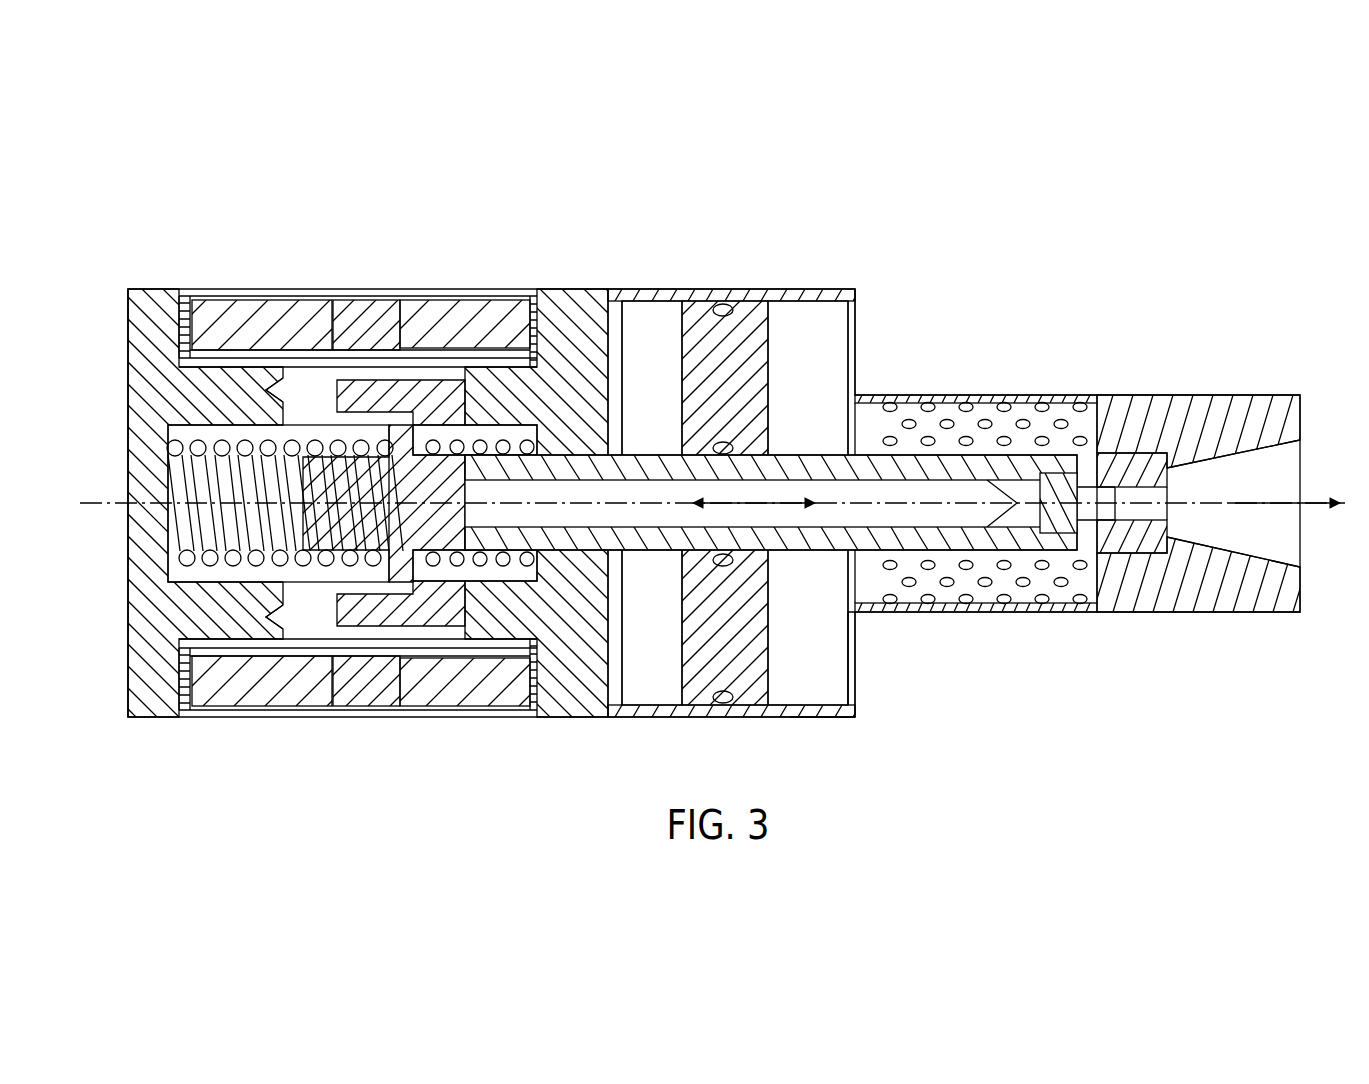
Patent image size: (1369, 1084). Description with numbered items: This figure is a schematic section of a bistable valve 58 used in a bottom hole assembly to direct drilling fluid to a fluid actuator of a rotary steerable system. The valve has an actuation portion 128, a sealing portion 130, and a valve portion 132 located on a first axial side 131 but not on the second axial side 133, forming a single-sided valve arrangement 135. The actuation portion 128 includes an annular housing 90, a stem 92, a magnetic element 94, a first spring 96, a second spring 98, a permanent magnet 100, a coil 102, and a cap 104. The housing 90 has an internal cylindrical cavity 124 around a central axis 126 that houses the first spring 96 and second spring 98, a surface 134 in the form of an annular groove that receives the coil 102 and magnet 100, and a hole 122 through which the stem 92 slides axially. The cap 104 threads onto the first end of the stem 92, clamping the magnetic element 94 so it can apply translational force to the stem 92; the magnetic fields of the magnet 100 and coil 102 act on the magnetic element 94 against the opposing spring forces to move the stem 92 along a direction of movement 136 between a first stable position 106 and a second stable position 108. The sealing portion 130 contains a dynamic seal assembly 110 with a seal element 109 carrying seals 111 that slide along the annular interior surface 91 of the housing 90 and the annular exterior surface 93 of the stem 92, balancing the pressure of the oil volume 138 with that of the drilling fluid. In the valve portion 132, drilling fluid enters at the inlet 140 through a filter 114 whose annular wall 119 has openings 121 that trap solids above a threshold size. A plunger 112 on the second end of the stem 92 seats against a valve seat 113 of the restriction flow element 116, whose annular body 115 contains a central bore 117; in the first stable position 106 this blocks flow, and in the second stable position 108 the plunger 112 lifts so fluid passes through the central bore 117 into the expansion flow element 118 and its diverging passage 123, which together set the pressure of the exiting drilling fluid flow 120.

The bistable valve 58 is at (470, 190).
The housing 90 is at (560, 545).
The annular interior surface 91 is at (810, 313).
The stem 92 is at (570, 535).
The annular exterior surface 93 is at (637, 455).
The magnetic element 94 is at (420, 620).
The first spring 96 is at (180, 448).
The second spring 98 is at (483, 437).
The magnet 100 is at (360, 320).
The coil 102 is at (435, 318).
The cap 104 is at (320, 533).
The first stable position 106 is at (458, 633).
The second stable position 108 is at (285, 383).
The seal element 109 is at (667, 703).
The dynamic seal assembly 110 is at (735, 420).
The seals 111 is at (735, 565).
The plunger 112 is at (1050, 470).
The valve seat 113 is at (1083, 440).
The filter 114 is at (957, 598).
The annular body 115 is at (1115, 555).
The restriction flow element 116 is at (1160, 555).
The central bore 117 is at (1133, 470).
The expansion flow element 118 is at (1222, 545).
The annular wall 119 is at (875, 395).
The drilling fluid flow 120 is at (1289, 478).
The openings 121 is at (975, 400).
The hole 122 is at (553, 447).
The diverging passage 123 is at (1225, 395).
The internal cylindrical cavity 124 is at (205, 427).
The central axis 126 is at (90, 500).
The actuation portion 128 is at (195, 280).
The sealing portion 130 is at (712, 275).
The first axial side 131 is at (870, 645).
The valve portion 132 is at (1188, 380).
The second axial side 133 is at (105, 577).
The surface 134 is at (512, 300).
The single-sided valve arrangement 135 is at (745, 762).
The direction of movement 136 is at (758, 500).
The oil volume 138 is at (642, 327).
The inlet 140 is at (940, 390).